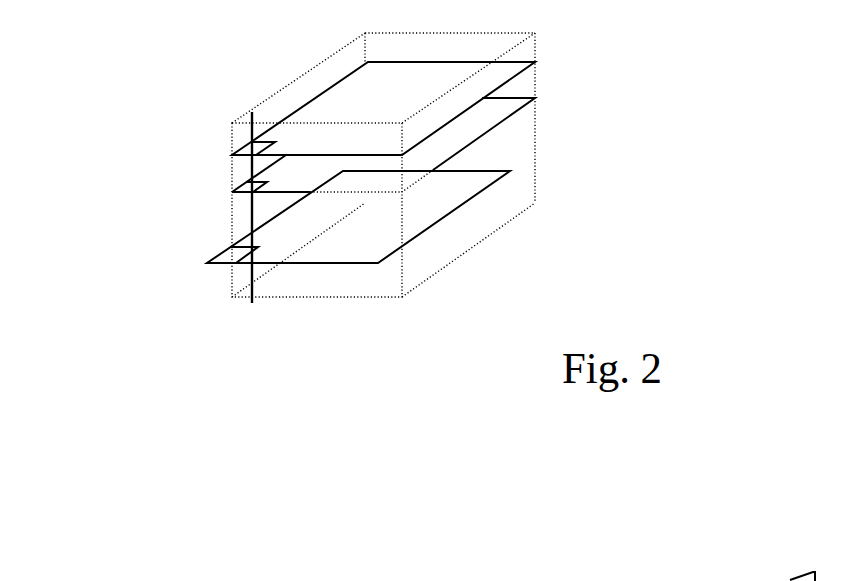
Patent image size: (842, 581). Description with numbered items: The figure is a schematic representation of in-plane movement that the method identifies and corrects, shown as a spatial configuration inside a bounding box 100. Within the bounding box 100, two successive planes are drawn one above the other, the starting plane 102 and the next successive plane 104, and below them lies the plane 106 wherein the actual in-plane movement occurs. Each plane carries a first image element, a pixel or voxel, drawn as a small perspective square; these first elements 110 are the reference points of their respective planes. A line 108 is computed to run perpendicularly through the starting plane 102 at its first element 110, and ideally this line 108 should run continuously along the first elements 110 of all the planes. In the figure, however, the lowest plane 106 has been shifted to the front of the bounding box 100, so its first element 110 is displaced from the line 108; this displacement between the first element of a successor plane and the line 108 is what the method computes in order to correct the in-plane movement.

The bounding box 100 is at (288, 297).
The starting plane 102 is at (535, 62).
The successive plane 104 is at (535, 98).
The plane of in-plane movement 106 is at (510, 171).
The line 108 is at (252, 112).
The first elements 110 is at (232, 155).